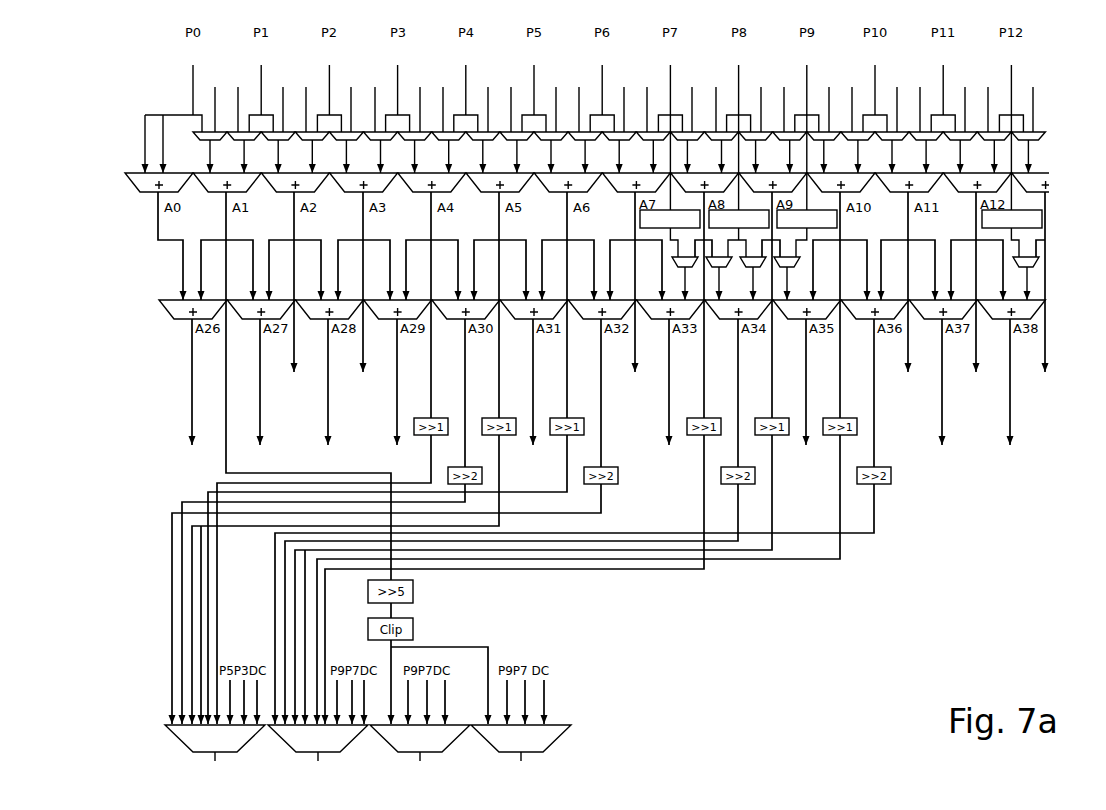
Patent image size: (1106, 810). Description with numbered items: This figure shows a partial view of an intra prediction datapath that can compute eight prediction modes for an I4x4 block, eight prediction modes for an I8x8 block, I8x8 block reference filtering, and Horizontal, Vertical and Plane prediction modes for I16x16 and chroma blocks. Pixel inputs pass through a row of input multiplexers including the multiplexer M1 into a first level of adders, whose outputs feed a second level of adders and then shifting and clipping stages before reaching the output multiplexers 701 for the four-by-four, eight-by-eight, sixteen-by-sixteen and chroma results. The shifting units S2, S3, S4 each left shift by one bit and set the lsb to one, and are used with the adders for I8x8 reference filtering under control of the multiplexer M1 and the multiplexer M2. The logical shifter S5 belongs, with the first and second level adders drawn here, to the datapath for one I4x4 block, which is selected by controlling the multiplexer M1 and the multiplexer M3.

The multiplexers 701 is at (157, 747).
The multiplexer M1 is at (207, 130).
The multiplexer M2 is at (679, 278).
The multiplexer M3 is at (1020, 278).
The shifting unit S2 is at (670, 226).
The shifting unit S3 is at (739, 226).
The shifting unit S4 is at (807, 226).
The logical shifter S5 is at (1012, 226).